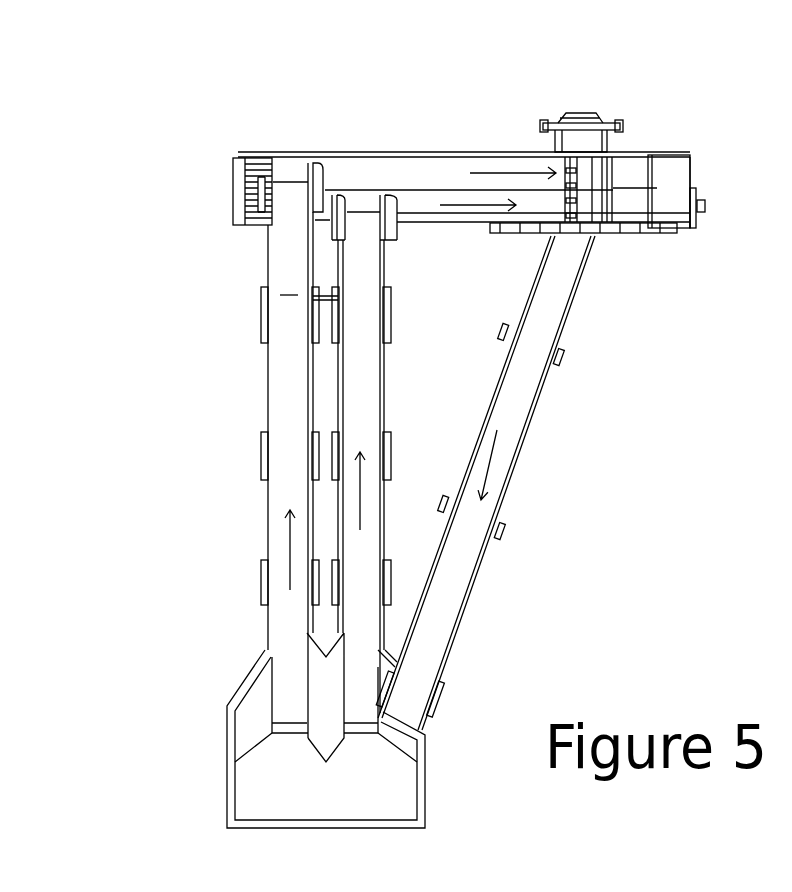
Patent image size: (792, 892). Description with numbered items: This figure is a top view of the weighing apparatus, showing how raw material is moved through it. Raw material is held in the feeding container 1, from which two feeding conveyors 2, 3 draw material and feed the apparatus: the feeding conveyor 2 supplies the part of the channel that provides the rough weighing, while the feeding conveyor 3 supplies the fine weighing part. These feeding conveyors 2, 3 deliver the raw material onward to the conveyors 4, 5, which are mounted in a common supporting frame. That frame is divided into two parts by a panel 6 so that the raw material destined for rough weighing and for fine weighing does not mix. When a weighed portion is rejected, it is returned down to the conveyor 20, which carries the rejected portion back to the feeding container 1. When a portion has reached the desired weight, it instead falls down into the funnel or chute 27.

The feeding container 1 is at (293, 784).
The feeding conveyor 2 is at (293, 487).
The feeding conveyor 3 is at (368, 415).
The conveyor 4 is at (345, 178).
The conveyor 5 is at (412, 205).
The panel 6 is at (462, 190).
The conveyor 20 is at (528, 348).
The funnel (chute) 27 is at (580, 138).